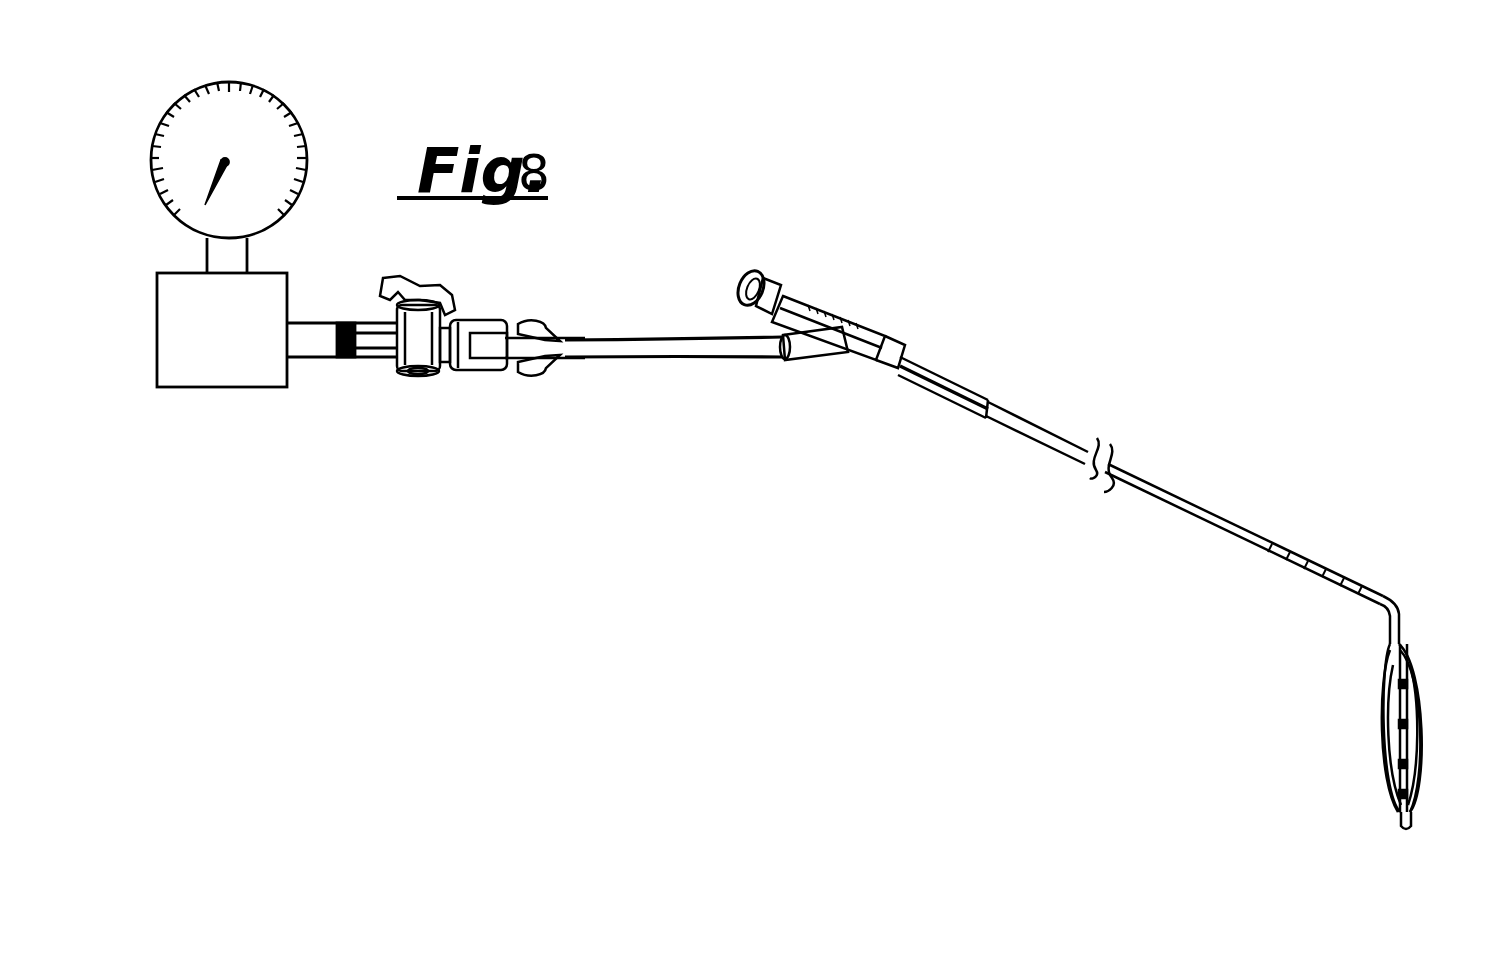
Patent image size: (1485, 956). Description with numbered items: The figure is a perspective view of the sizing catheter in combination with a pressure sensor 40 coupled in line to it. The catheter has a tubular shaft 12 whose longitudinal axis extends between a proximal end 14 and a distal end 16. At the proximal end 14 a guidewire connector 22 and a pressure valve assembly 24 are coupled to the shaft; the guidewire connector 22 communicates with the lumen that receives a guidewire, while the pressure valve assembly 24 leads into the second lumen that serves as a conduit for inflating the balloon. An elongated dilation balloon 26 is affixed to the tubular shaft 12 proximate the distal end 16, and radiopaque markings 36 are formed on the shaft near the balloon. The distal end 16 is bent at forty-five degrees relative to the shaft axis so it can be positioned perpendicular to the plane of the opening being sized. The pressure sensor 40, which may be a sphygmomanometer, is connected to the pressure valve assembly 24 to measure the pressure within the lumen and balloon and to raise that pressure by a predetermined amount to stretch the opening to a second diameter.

The tubular shaft 12 is at (1052, 441).
The proximal end 14 is at (753, 258).
The distal end 16 is at (1415, 611).
The guidewire connector 22 is at (842, 308).
The pressure valve assembly 24 is at (462, 372).
The dilation balloon 26 is at (1384, 683).
The radiopaque markings 36 is at (1278, 541).
The pressure sensor 40 is at (212, 362).